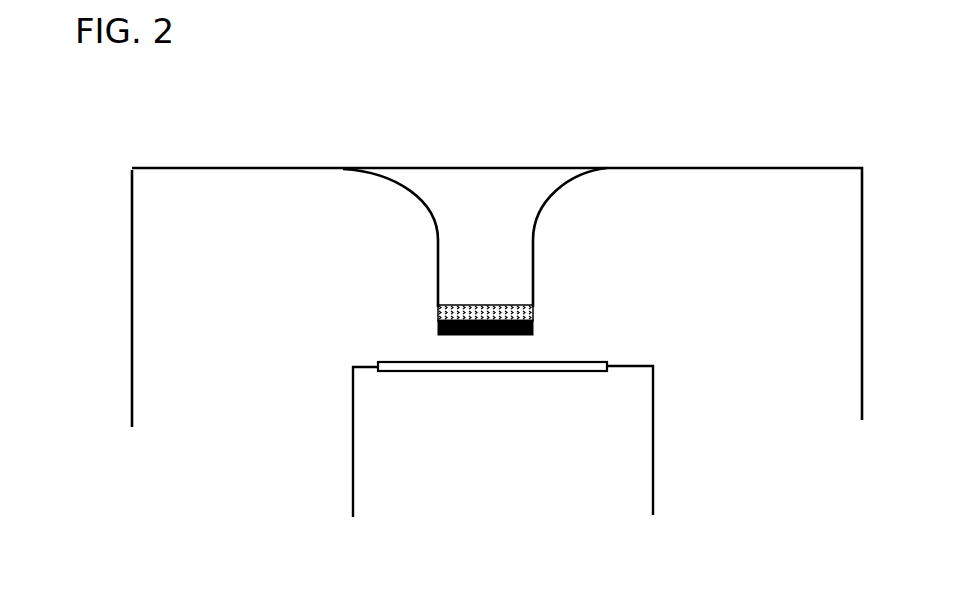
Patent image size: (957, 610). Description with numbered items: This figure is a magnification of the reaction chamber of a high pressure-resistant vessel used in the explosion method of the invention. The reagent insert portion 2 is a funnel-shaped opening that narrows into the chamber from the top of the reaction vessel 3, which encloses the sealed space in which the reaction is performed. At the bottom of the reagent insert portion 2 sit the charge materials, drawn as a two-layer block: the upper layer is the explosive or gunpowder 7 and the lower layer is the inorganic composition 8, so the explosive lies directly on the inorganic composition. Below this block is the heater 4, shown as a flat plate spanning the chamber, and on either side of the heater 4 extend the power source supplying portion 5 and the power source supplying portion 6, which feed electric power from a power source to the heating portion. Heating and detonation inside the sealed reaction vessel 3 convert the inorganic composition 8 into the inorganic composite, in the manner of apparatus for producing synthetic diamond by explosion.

The reagent insert portion 2 is at (428, 185).
The reaction vessel 3 is at (733, 205).
The heater 4 is at (530, 372).
The power source supplying portion 5 is at (360, 459).
The power source supplying portion 6 is at (632, 458).
The explosive or gunpowder 7 is at (440, 306).
The inorganic composition 8 is at (440, 334).